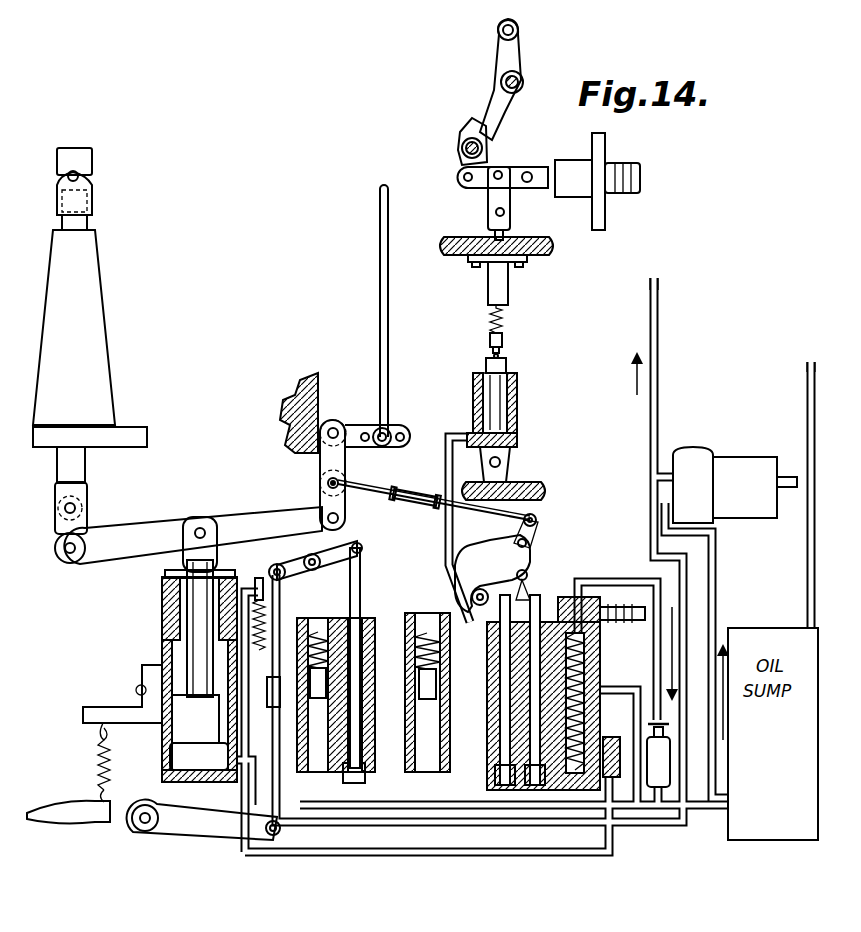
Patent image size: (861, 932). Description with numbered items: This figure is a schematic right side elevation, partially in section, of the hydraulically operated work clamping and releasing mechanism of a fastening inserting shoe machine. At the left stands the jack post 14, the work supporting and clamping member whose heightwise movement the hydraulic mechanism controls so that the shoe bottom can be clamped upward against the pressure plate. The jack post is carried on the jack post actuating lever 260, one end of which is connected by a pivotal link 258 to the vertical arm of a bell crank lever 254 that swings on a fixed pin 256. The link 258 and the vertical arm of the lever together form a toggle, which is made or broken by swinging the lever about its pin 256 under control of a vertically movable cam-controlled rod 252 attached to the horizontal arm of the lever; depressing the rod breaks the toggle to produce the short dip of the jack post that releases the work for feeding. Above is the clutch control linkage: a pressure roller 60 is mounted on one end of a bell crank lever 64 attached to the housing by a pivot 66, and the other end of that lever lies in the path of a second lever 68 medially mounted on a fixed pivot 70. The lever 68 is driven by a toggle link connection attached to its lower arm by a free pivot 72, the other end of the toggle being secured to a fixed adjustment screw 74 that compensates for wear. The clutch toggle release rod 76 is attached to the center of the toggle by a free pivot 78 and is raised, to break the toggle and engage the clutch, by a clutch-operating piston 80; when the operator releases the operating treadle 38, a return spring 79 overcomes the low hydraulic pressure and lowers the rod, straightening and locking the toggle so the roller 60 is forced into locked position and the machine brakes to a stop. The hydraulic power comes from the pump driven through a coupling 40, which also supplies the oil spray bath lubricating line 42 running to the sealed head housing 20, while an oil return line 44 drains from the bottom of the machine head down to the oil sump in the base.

The jack post 14 is at (92, 226).
The head housing 20 is at (605, 148).
The operating treadle 38 is at (90, 826).
The coupling 40 is at (770, 518).
The oil spray bath lubricating line 42 is at (659, 323).
The oil return line 44 is at (806, 408).
The pressure roller 60 is at (518, 26).
The bell crank lever 64 is at (520, 58).
The pivot 66 is at (522, 86).
The second lever 68 is at (458, 155).
The fixed pivot 70 is at (482, 146).
The free pivot 72 is at (464, 180).
The adjustment screw 74 is at (612, 195).
The clutch toggle release rod 76 is at (503, 240).
The free pivot 78 is at (505, 172).
The return spring 79 is at (502, 318).
The clutch-operating piston 80 is at (517, 417).
The cam-controlled rod 252 is at (388, 312).
The bell crank lever 254 is at (355, 450).
The fixed pin 256 is at (338, 428).
The pivotal link 258 is at (347, 500).
The jack post actuating lever 260 is at (253, 518).